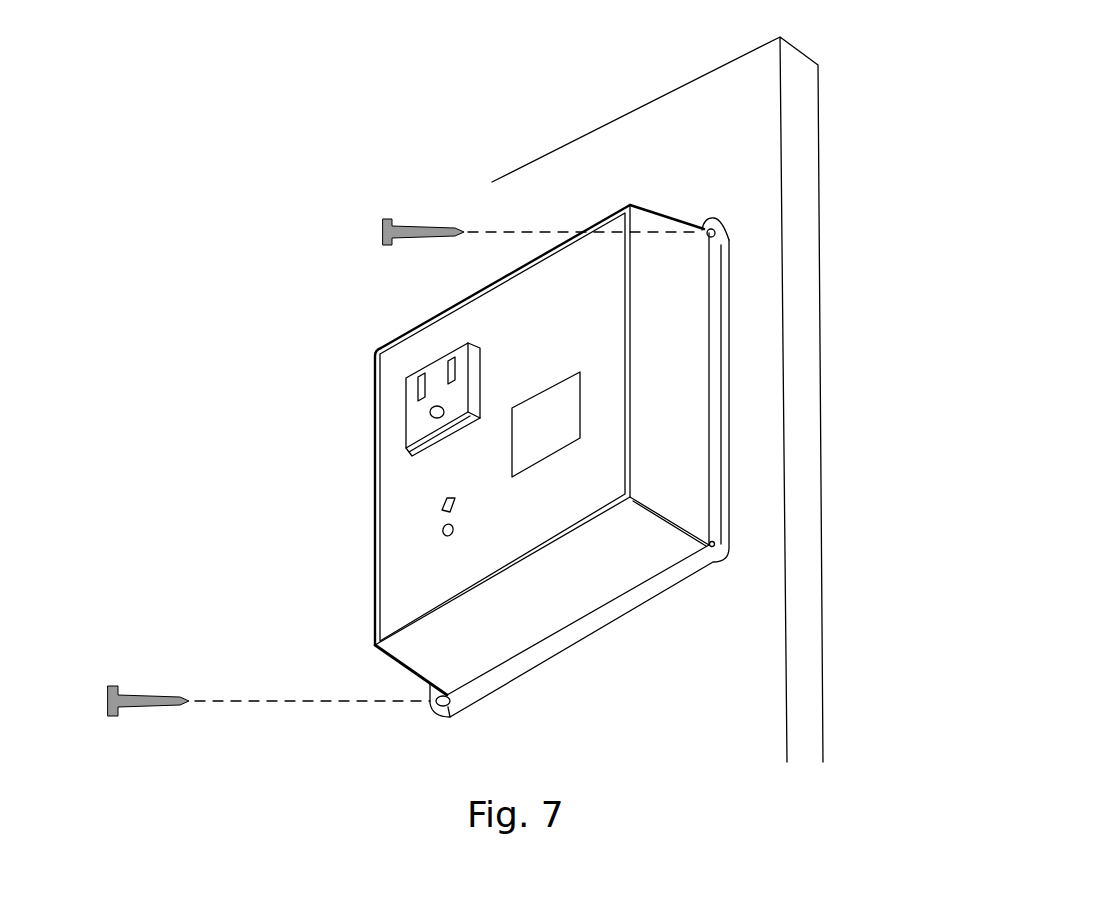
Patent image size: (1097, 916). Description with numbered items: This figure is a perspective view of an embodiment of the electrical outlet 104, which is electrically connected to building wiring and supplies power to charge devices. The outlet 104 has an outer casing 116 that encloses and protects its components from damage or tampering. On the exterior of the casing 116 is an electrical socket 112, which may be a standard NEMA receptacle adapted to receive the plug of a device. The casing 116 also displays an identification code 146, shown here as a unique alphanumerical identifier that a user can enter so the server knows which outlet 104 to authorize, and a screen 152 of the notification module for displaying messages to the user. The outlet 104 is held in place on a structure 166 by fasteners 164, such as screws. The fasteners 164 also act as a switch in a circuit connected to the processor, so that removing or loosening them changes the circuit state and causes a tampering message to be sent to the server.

The electrical outlet 104 is at (627, 645).
The electrical socket 112 is at (432, 375).
The outer casing 116 is at (388, 570).
The identification code 146 is at (607, 485).
The screen 152 is at (552, 413).
The fasteners 164 is at (418, 220).
The structure 166 is at (752, 177).